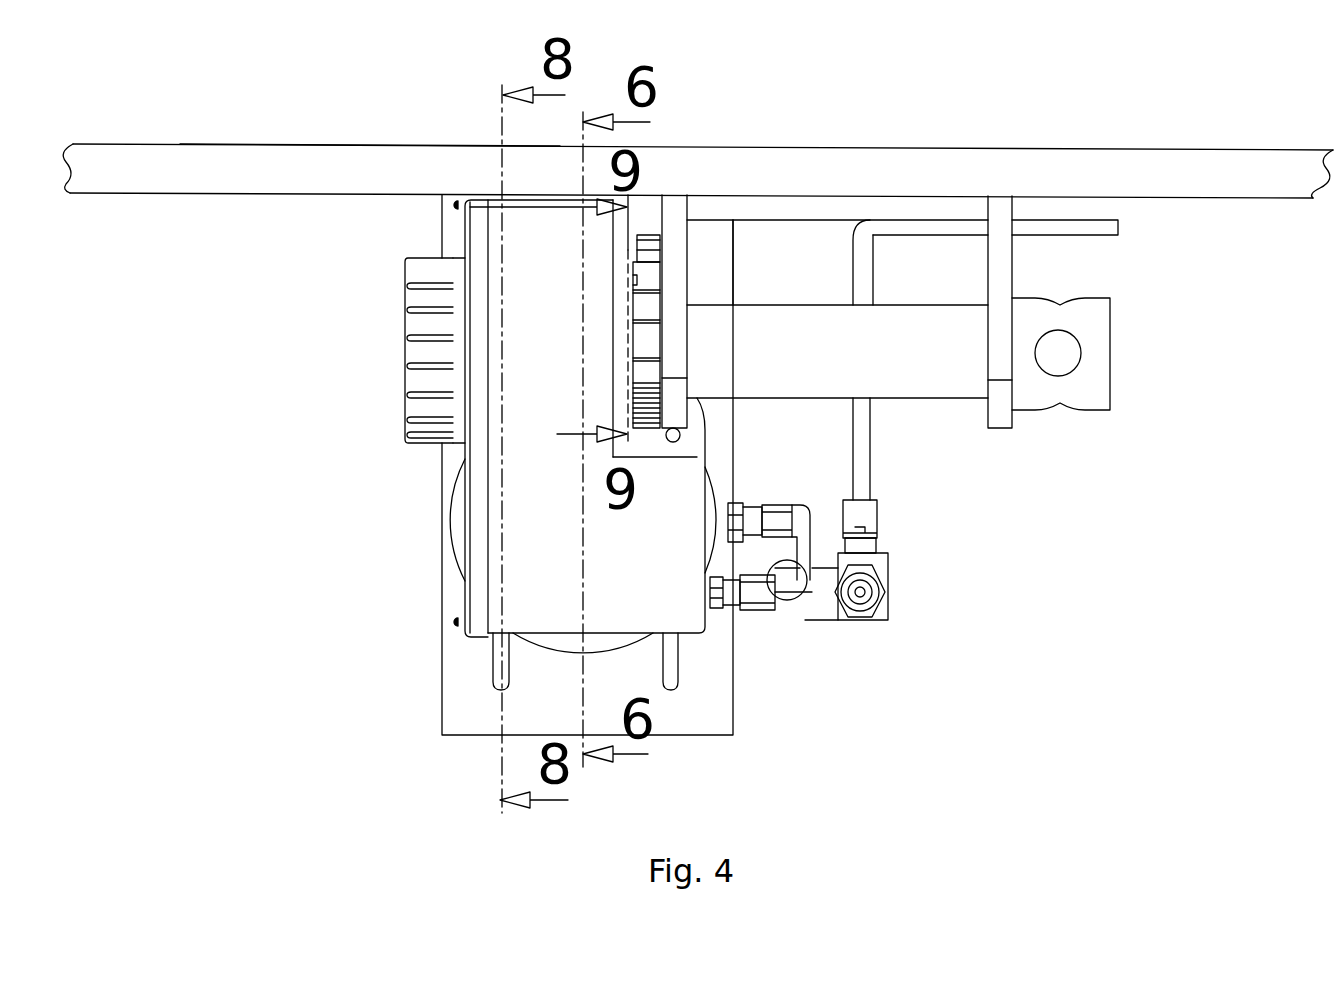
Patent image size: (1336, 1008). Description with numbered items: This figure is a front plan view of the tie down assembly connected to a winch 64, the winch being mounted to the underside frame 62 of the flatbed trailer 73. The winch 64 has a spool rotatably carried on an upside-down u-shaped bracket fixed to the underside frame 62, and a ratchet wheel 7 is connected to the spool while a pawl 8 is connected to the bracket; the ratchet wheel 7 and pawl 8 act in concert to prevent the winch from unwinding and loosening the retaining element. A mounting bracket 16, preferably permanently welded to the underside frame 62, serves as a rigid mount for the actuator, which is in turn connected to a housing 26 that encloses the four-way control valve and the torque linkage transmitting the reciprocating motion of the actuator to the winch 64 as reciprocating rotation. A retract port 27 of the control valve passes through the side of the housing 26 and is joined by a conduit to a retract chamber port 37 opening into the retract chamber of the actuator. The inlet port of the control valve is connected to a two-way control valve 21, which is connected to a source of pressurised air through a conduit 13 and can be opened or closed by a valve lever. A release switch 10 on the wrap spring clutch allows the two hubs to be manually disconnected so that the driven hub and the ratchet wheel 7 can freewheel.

The ratchet wheel 7 is at (645, 340).
The pawl 8 is at (650, 258).
The release switch 10 is at (415, 380).
The conduit 13 is at (1060, 222).
The mounting bracket 16 is at (462, 702).
The two-way control valve 21 is at (888, 605).
The housing 26 is at (533, 517).
The retract port 27 is at (723, 593).
The retract chamber port 37 is at (743, 522).
The underside frame 62 is at (1182, 198).
The winch 64 is at (985, 452).
The trailer 73 is at (223, 168).